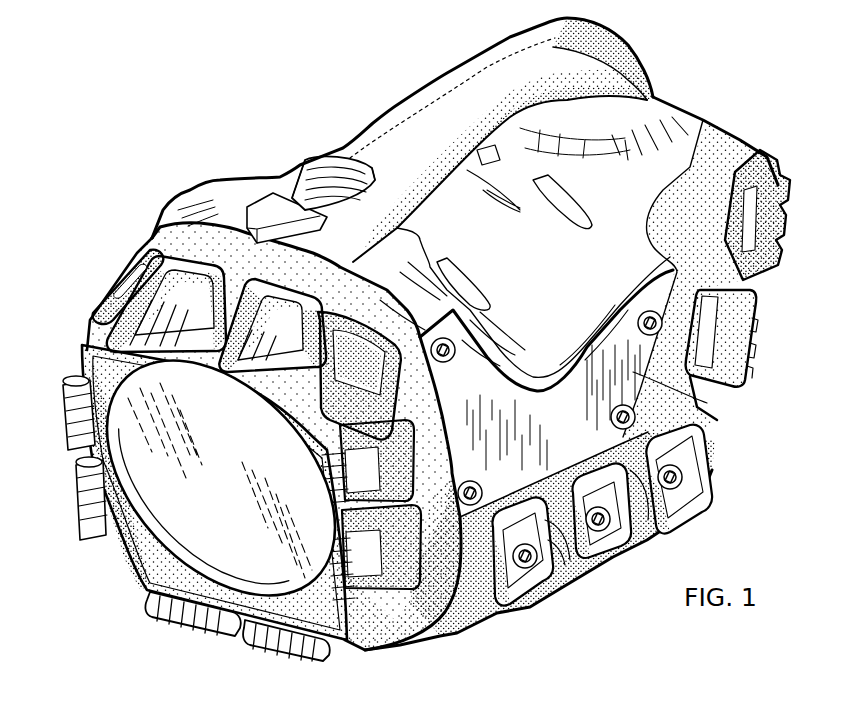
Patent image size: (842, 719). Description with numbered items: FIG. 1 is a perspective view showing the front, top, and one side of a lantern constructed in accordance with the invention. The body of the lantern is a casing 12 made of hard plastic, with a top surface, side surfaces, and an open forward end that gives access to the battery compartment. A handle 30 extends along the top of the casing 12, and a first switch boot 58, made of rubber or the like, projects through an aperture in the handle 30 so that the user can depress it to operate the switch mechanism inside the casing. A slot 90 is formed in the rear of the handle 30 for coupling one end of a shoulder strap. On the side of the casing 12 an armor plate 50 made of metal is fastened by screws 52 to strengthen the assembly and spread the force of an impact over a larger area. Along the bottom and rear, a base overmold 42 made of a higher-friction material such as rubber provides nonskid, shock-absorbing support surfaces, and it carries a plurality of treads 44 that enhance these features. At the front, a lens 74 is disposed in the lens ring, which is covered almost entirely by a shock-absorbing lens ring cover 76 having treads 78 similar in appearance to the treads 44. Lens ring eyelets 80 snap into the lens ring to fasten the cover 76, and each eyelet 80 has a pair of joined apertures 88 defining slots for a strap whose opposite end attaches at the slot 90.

The casing 12 is at (668, 115).
The handle 30 is at (445, 100).
The base overmold 42 is at (758, 278).
The treads 44 is at (587, 580).
The armor plates 50 is at (705, 400).
The screws 52 is at (712, 453).
The first switch boot 58 is at (318, 170).
The lens 74 is at (170, 520).
The lens ring cover 76 is at (178, 236).
The treads 78 is at (245, 638).
The lens ring eyelets 80 is at (75, 333).
The joined apertures 88 is at (108, 280).
The slot 90 is at (622, 50).